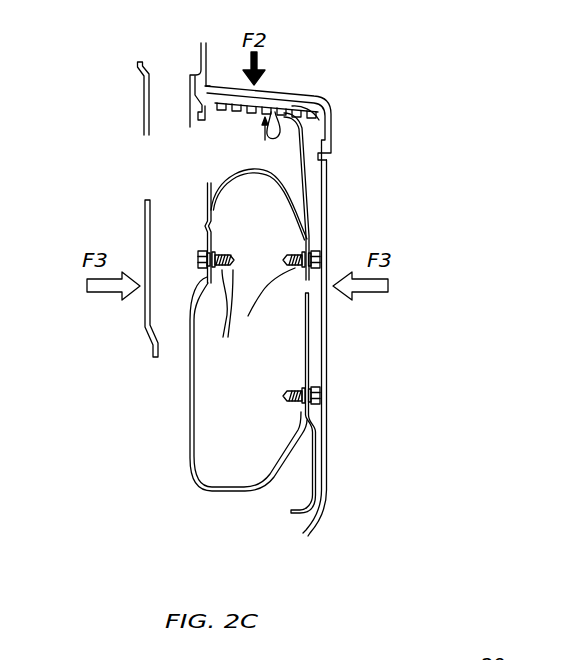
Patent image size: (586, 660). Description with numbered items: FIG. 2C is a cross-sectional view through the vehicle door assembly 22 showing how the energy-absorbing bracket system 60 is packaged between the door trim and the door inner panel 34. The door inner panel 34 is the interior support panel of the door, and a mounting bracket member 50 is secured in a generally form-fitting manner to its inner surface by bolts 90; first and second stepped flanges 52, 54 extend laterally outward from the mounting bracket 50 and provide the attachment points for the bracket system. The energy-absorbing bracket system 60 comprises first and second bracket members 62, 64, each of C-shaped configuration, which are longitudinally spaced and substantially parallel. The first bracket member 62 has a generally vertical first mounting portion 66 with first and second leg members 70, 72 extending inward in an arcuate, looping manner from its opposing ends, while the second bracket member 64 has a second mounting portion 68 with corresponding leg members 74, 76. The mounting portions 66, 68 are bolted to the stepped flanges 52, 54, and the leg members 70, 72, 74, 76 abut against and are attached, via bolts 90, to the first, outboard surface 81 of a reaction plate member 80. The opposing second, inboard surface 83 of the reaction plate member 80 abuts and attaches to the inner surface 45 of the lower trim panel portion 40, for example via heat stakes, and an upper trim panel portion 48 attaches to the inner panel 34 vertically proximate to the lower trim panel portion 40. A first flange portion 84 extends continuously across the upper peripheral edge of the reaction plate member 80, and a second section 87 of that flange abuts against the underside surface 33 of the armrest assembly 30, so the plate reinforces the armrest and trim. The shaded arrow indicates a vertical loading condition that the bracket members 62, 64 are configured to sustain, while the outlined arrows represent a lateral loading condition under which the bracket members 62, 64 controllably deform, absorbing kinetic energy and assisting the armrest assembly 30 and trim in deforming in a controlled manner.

The vehicle door assembly 22 is at (480, 203).
The armrest assembly 30 is at (333, 128).
The underside surface of the armrest assembly 33 is at (271, 112).
The door inner panel 34 is at (145, 247).
The lower trim panel portion 40 is at (327, 360).
The inner surface of the trim panel lower portion 45 is at (318, 212).
The upper trim panel portion 48 is at (202, 65).
The mounting bracket member 50 is at (203, 195).
The first stepped flange 52 is at (150, 291).
The second stepped flange 54 is at (200, 287).
The energy-absorbing bracket system 60 is at (73, 265).
The first bracket member 62 is at (180, 403).
The second bracket member 64 is at (176, 372).
The first mounting portion 66 is at (198, 403).
The second mounting portion 68 is at (192, 432).
The first leg member 70 is at (217, 189).
The second leg member 72 is at (222, 403).
The first leg member of the second bracket member 74 is at (236, 174).
The second leg member of the second bracket member 76 is at (222, 495).
The reaction plate member 80 is at (305, 335).
The first outboard surface 81 is at (299, 162).
The second inboard surface 83 is at (320, 163).
The first flange portion 84 is at (332, 102).
The second section of the first flange portion 87 is at (305, 112).
The bolts 90 is at (290, 403).